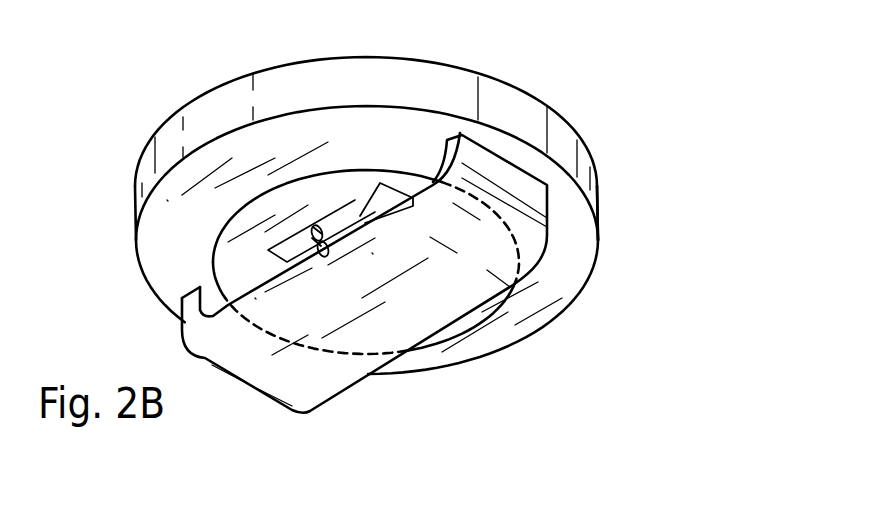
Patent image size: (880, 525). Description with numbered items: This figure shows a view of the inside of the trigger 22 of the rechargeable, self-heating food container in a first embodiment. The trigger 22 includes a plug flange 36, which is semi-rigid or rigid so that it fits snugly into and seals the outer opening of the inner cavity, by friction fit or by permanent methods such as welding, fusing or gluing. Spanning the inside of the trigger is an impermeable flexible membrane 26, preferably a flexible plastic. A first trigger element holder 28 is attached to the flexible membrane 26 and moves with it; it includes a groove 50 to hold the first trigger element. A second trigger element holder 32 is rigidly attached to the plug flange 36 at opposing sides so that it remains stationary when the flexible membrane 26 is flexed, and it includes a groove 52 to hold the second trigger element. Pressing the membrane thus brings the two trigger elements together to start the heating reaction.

The trigger 22 is at (660, 141).
The flexible membrane 26 is at (218, 240).
The first trigger element holder 28 is at (357, 212).
The second trigger element holder 32 is at (290, 412).
The plug flange 36 is at (598, 188).
The groove 50 is at (318, 226).
The groove 52 is at (328, 256).